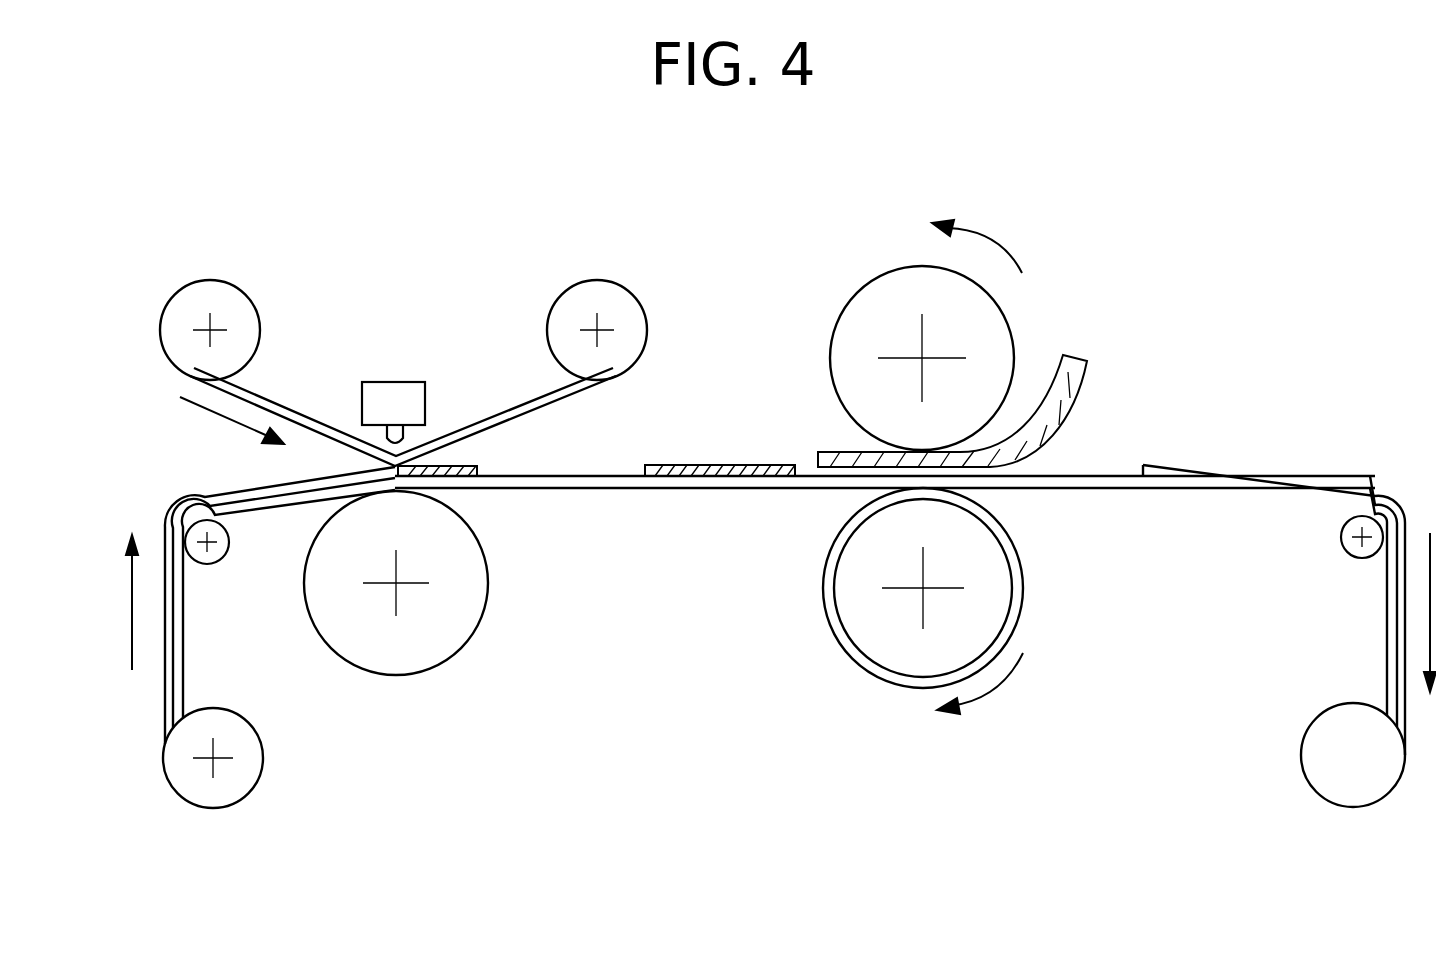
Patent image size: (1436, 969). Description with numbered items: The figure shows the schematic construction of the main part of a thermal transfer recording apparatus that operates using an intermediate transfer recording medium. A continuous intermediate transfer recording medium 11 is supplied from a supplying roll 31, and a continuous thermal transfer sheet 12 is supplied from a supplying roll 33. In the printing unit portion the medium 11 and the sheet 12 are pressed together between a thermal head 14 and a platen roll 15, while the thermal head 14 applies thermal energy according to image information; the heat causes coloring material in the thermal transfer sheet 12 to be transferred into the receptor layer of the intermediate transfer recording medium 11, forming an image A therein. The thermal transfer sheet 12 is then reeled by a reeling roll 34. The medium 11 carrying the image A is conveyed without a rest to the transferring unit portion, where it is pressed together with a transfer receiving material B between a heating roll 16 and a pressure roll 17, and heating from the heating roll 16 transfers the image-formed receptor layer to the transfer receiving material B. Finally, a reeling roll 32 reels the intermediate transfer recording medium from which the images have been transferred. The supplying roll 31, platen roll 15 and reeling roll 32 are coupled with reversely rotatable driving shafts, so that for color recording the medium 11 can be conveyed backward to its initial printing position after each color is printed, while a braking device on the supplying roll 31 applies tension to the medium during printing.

The intermediate transfer recording medium 11 is at (530, 490).
The thermal transfer sheet 12 is at (480, 397).
The thermal head 14 is at (387, 380).
The platen roll 15 is at (405, 672).
The heating roll 16 is at (880, 677).
The pressure roll 17 is at (880, 276).
The supplying roll for the intermediate transfer recording medium 31 is at (262, 764).
The reeling roll for the intermediate transfer recording medium 32 is at (1305, 788).
The supplying roll for the thermal transfer sheet 33 is at (178, 292).
The reeling roll for the thermal transfer sheet 34 is at (613, 283).
The image A is at (762, 466).
The transfer receiving material B is at (1085, 382).